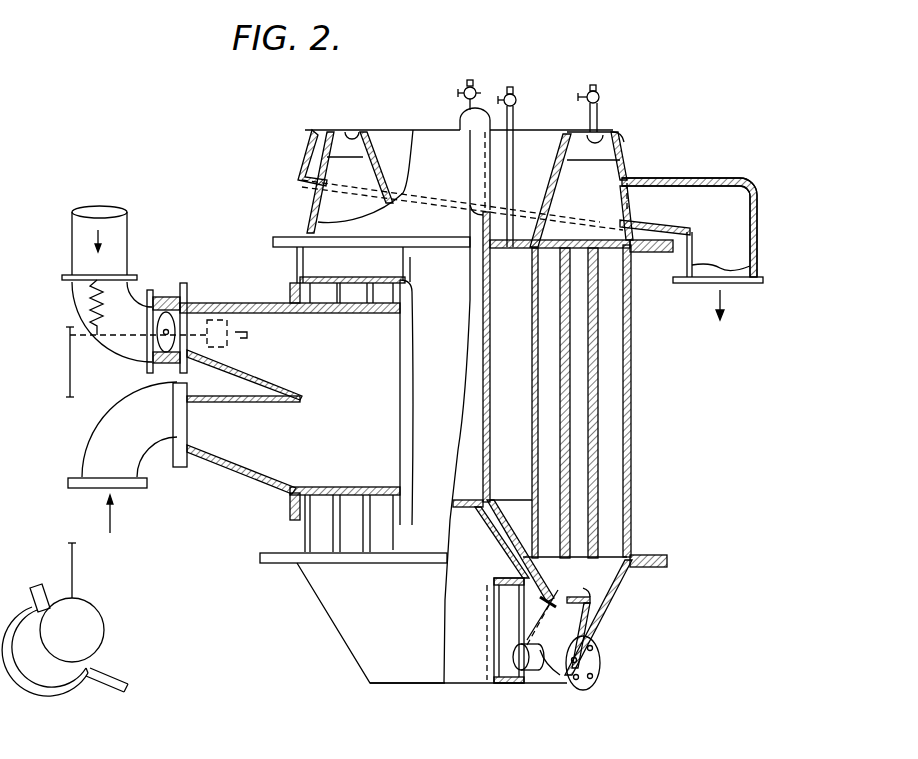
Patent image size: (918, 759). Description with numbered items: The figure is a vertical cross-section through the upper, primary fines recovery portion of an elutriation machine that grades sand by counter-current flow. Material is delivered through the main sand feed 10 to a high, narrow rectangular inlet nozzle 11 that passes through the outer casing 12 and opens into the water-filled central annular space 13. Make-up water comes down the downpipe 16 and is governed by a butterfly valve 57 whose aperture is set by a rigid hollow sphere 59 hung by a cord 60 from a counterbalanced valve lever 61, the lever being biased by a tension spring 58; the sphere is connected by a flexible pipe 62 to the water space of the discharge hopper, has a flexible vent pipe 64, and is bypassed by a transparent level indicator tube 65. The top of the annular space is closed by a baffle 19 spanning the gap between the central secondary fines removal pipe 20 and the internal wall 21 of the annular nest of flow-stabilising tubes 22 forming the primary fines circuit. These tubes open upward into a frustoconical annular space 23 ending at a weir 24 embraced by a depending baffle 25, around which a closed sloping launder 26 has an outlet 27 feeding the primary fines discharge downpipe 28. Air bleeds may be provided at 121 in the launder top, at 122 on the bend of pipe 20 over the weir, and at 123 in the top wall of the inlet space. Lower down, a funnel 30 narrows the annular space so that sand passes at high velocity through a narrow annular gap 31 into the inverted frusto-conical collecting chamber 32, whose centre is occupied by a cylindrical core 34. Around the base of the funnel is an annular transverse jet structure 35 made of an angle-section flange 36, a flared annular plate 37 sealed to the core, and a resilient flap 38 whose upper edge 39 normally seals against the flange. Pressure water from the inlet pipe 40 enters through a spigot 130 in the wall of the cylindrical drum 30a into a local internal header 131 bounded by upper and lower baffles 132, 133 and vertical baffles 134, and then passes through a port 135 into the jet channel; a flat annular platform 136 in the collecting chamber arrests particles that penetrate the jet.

The main sand feed 10 is at (87, 483).
The inlet nozzle 11 is at (230, 472).
The outer casing 12 is at (410, 365).
The central annular space 13 is at (400, 397).
The downpipe 16 is at (128, 237).
The baffle 19 is at (511, 379).
The secondary fines removal pipe 20 is at (460, 122).
The internal wall 21 is at (530, 362).
The flow-stabilising tubes 22 is at (310, 543).
The frustoconical annular space 23 is at (590, 197).
The weir 24 is at (330, 132).
The depending baffle 25 is at (305, 153).
The launder 26 is at (305, 182).
The outlet 27 is at (700, 197).
The primary fines discharge downpipe 28 is at (735, 283).
The funnel 30 is at (490, 503).
The cylindrical drum 30a is at (523, 683).
The annular gap 31 is at (525, 560).
The collecting chamber 32 is at (600, 558).
The cylindrical core 34 is at (487, 660).
The annular transverse jet structure 35 is at (620, 580).
The angle-section flange 36 is at (540, 598).
The flared annular plate 37 is at (508, 612).
The resilient flap 38 is at (587, 623).
The upper edge 39 is at (570, 603).
The inlet pipe 40 is at (600, 670).
The butterfly valve 57 is at (187, 300).
The tension spring 58 is at (72, 300).
The hollow sphere 59 is at (85, 620).
The cord 60 is at (70, 370).
The valve lever 61 is at (75, 335).
The flexible pipe 62 is at (115, 672).
The flexible vent pipe 64 is at (43, 583).
The level indicator tube 65 is at (50, 677).
The air bleed 121 is at (600, 97).
The air bleed 122 is at (463, 93).
The air bleed 123 is at (515, 100).
The spigot 130 is at (537, 668).
The internal header 131 is at (520, 623).
The upper baffle 132 is at (517, 573).
The lower baffle 133 is at (503, 687).
The vertical baffle 134 is at (483, 650).
The port 135 is at (497, 600).
The annular platform 136 is at (590, 590).